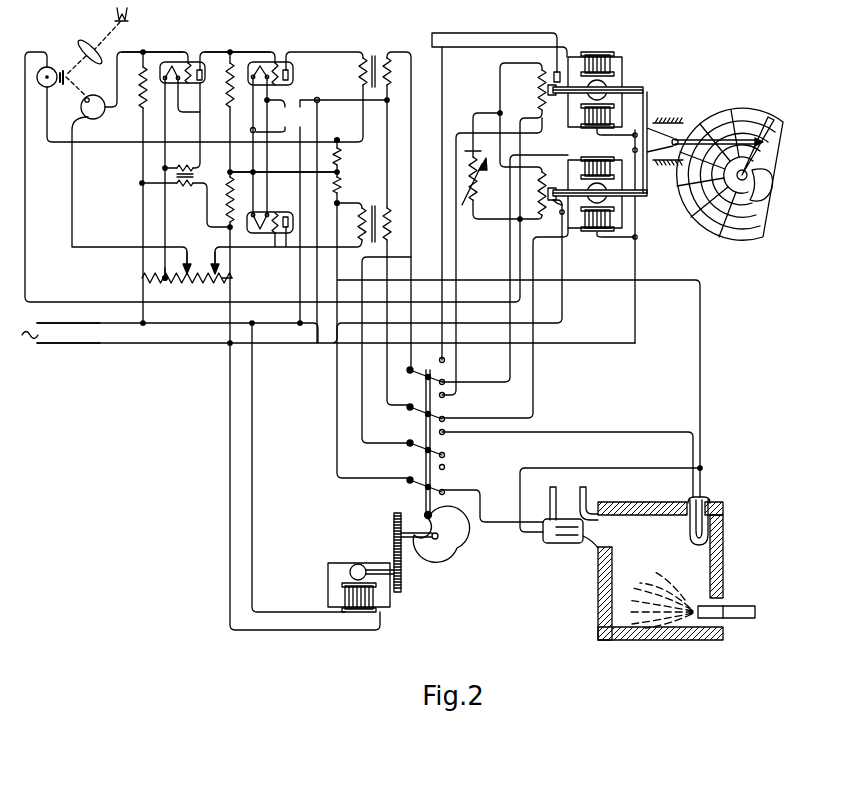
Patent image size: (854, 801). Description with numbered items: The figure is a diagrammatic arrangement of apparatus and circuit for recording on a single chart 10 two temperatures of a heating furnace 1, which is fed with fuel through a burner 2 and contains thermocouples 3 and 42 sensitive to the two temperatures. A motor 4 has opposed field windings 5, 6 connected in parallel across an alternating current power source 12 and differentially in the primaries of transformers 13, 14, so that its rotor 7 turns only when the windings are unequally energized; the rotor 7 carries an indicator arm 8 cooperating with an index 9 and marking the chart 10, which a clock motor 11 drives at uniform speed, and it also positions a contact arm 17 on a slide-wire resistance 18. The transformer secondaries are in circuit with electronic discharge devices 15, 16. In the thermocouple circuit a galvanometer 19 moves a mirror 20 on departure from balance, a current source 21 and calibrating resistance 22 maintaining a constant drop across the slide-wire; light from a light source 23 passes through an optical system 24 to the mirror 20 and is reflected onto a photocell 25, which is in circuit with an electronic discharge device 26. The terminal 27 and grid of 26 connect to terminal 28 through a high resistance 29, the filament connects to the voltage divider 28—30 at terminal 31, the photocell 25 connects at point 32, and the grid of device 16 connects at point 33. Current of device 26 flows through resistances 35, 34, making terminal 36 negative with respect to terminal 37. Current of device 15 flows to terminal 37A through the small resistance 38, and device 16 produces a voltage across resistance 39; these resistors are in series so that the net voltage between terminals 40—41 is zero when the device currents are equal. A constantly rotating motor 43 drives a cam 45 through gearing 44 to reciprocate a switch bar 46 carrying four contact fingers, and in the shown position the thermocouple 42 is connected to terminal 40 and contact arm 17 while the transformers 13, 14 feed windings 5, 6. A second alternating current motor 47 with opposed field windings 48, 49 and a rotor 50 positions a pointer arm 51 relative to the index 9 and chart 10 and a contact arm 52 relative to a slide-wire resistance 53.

The heating furnace 1 is at (598, 568).
The burner 2 is at (738, 606).
The thermocouple 3 is at (709, 530).
The motor 4 is at (624, 222).
The field winding 5 is at (600, 155).
The field winding 6 is at (600, 232).
The rotor 7 is at (616, 196).
The indicator arm 8 is at (662, 165).
The index 9 is at (772, 118).
The chart 10 is at (783, 130).
The clock motor 11 is at (771, 192).
The alternating current power source 12 is at (152, 324).
The transformer 13 is at (365, 71).
The transformer 14 is at (364, 224).
The electronic discharge device 15 is at (293, 75).
The electronic discharge device 16 is at (275, 210).
The contact arm 17 is at (546, 180).
The slide-wire resistance 18 is at (546, 194).
The galvanometer 19 is at (47, 66).
The mirror 20 is at (65, 70).
The current source 21 is at (478, 146).
The calibrating resistance 22 is at (480, 186).
The light source 23 is at (128, 14).
The optical system 24 is at (101, 46).
The photocell 25 is at (101, 116).
The electronic discharge device 26 is at (196, 84).
The terminal 27 is at (143, 50).
The terminal 28 is at (138, 279).
The resistance 29 is at (132, 87).
The voltage divider point 30 is at (233, 278).
The terminal 31 is at (163, 283).
The voltage divider point 32 is at (187, 280).
The voltage divider point 33 is at (215, 280).
The resistance 34 is at (227, 104).
The resistance 35 is at (219, 199).
The terminal 36 is at (230, 50).
The terminal 37 is at (229, 170).
The terminal 37A is at (255, 171).
The resistance 38 is at (350, 157).
The resistance 39 is at (350, 183).
The terminal 40 is at (336, 205).
The terminal 41 is at (338, 138).
The thermocouple 42 is at (572, 544).
The motor 43 is at (327, 574).
The gearing 44 is at (393, 540).
The cam 45 is at (446, 560).
The switch bar 46 is at (425, 511).
The alternating current motor 47 is at (624, 65).
The field winding 48 is at (592, 51).
The field winding 49 is at (588, 130).
The rotor 50 is at (606, 86).
The pointer arm 51 is at (690, 128).
The contact arm 52 is at (546, 104).
The slide-wire resistance 53 is at (547, 86).